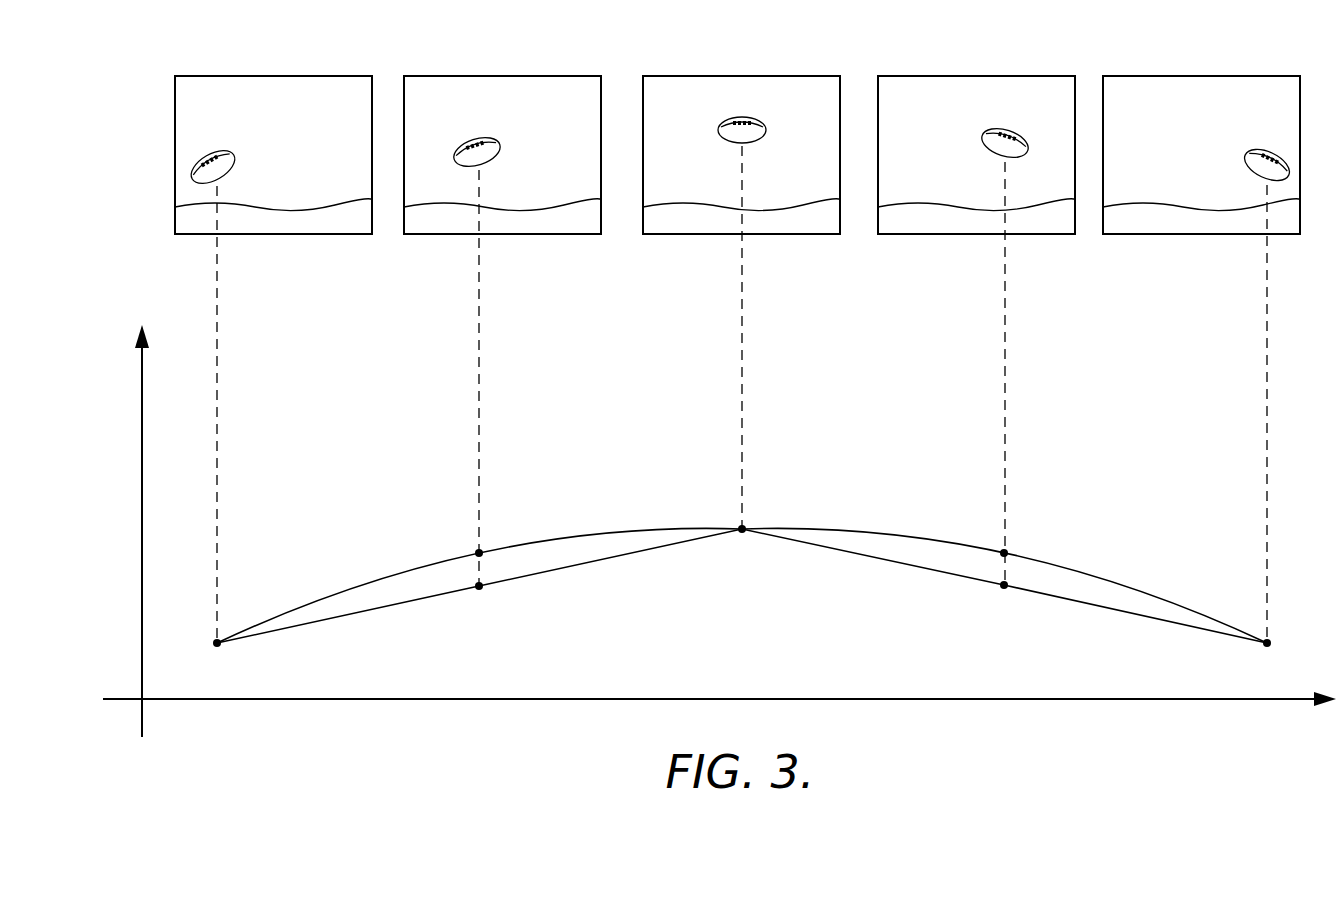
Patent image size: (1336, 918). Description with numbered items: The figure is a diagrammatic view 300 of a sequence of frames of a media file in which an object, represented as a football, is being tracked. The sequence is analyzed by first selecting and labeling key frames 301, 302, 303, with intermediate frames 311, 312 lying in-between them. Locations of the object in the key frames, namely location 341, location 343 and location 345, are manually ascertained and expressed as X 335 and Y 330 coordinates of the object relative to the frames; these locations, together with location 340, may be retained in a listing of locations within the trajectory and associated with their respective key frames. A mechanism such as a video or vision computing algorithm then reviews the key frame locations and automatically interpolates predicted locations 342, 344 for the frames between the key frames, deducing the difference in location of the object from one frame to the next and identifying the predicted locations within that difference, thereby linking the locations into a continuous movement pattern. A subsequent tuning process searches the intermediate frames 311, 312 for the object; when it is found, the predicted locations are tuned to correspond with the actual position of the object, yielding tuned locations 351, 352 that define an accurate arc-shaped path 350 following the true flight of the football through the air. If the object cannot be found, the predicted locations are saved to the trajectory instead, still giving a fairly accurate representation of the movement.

The diagrammatic view 300 is at (118, 84).
The key frame 301 is at (323, 234).
The key frame 302 is at (797, 234).
The key frame 303 is at (1192, 234).
The intermediate frame 311 is at (553, 234).
The intermediate frame 312 is at (947, 234).
The Y coordinate 330 is at (142, 494).
The X coordinate 335 is at (537, 699).
The location 340 is at (620, 566).
The location 341 is at (217, 647).
The predicted location 342 is at (480, 590).
The location 343 is at (1003, 589).
The predicted location 344 is at (742, 533).
The location 345 is at (1267, 647).
The arc-shaped path 350 is at (663, 527).
The tuned location 351 is at (475, 553).
The tuned location 352 is at (1006, 553).